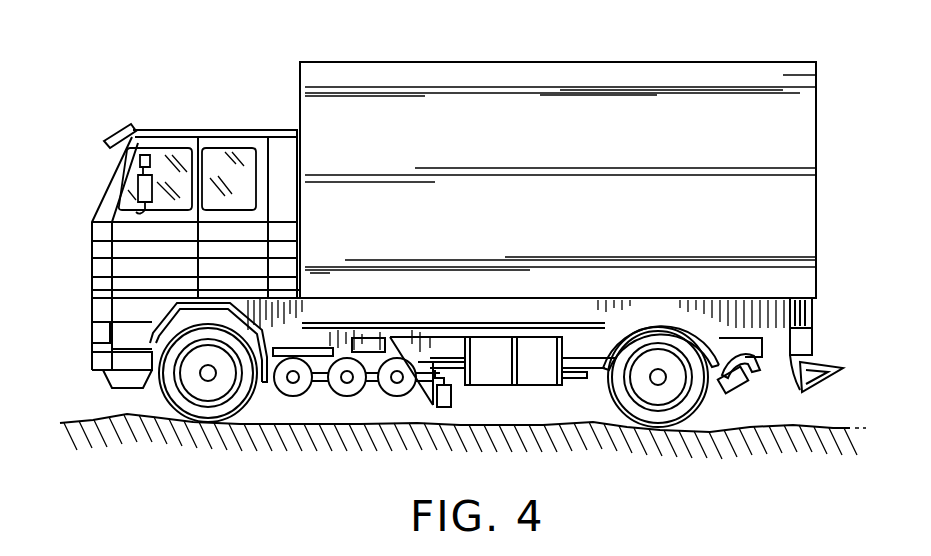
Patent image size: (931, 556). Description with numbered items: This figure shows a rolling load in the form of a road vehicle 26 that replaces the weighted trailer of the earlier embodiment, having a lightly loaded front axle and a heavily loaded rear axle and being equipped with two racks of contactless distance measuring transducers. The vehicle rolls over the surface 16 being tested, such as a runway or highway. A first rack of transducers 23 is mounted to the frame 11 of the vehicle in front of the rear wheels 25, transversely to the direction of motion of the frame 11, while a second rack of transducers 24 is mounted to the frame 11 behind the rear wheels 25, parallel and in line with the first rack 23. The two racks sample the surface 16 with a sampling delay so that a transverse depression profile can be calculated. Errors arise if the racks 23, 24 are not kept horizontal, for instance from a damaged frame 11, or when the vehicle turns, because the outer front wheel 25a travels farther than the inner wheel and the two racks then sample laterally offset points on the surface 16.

The road vehicle 26 is at (455, 60).
The outer front wheel 25a is at (163, 407).
The surface 16 is at (313, 425).
The first rack of transducers 23 is at (440, 405).
The rear wheels 25 is at (613, 405).
The second rack of transducers 24 is at (743, 390).
The frame 11 is at (772, 337).